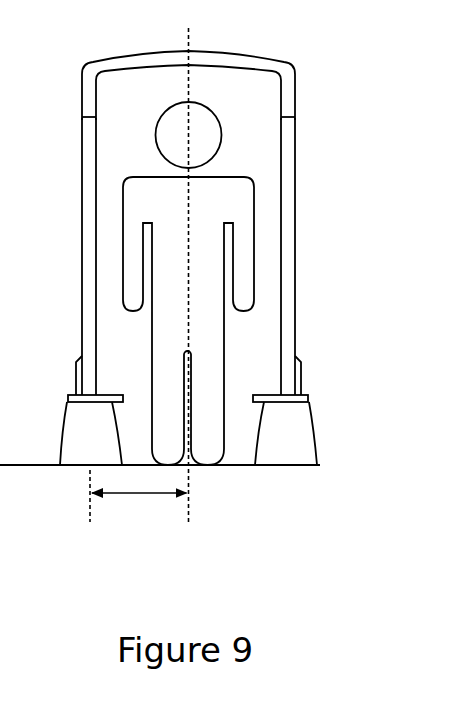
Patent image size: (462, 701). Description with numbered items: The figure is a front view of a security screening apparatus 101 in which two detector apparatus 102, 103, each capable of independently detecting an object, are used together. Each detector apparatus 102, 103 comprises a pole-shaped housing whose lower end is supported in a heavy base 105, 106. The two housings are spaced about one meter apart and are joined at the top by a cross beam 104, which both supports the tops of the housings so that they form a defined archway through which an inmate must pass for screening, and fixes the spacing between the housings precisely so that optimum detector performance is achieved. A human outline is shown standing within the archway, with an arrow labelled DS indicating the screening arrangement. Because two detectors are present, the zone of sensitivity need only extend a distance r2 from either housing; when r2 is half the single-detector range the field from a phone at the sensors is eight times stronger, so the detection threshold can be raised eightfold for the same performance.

The security screening apparatus 101 is at (223, 201).
The detector apparatus 102 is at (287, 310).
The detector apparatus 103 is at (88, 330).
The cross beam 104 is at (253, 65).
The heavy base 105 is at (292, 452).
The heavy base 106 is at (66, 436).
The scanning direction / detection space DS is at (66, 175).
The maximum detection distance r2 is at (138, 499).